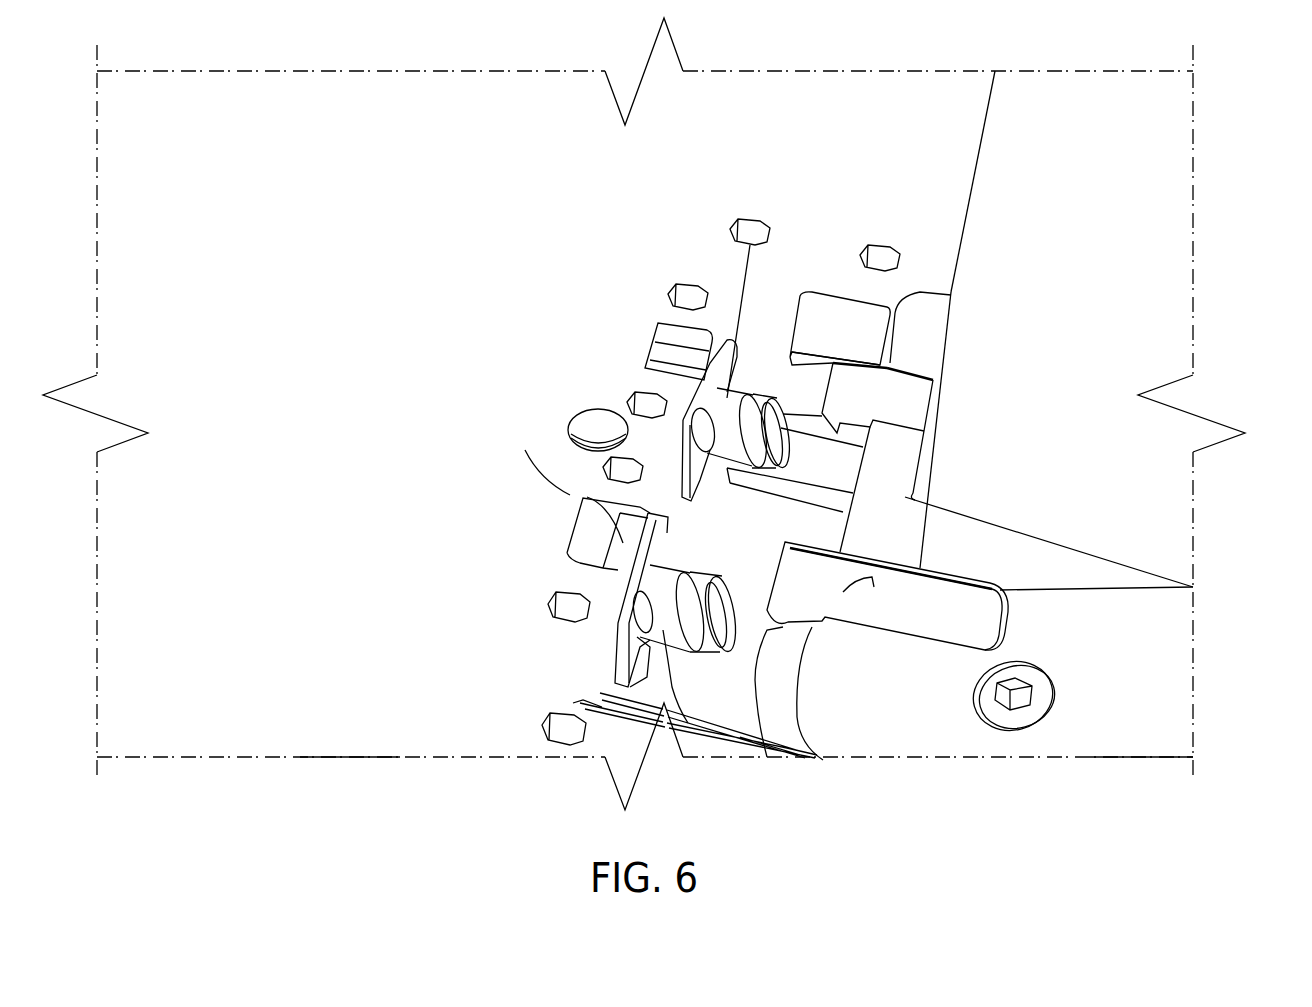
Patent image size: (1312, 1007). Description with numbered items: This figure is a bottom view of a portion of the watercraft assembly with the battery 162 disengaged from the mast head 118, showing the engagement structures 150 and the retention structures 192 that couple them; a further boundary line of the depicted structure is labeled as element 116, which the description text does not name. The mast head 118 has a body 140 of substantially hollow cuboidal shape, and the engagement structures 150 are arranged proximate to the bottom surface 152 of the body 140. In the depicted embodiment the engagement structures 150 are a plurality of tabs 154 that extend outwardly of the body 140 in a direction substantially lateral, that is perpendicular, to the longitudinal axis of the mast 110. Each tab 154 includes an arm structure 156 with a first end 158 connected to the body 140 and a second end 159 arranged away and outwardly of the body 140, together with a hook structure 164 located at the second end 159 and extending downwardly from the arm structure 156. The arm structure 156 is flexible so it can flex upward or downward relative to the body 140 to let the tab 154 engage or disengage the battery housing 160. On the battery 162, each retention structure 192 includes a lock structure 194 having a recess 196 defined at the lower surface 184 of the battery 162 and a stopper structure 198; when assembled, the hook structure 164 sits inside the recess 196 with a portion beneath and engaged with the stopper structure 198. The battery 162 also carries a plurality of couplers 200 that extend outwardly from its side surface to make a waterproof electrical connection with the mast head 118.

The mast 110 is at (1094, 84).
The seat frame member 116 is at (997, 212).
The mast head 118 is at (963, 731).
The body 140 is at (1097, 738).
The engagement structures 150 is at (912, 600).
The bottom surface 152 is at (1118, 644).
The tabs 154 is at (846, 385).
The arm structure 156 is at (873, 580).
The first end 158 is at (990, 617).
The second end 159 is at (790, 570).
The battery housing 160 is at (385, 743).
The battery 162 is at (488, 420).
The hook structure 164 is at (767, 757).
The lower surface 184 is at (480, 328).
The retention structures 192 is at (683, 357).
The lock structure 194 is at (650, 363).
The recess 196 is at (577, 560).
The stopper structure 198 is at (587, 497).
The couplers 200 is at (660, 327).